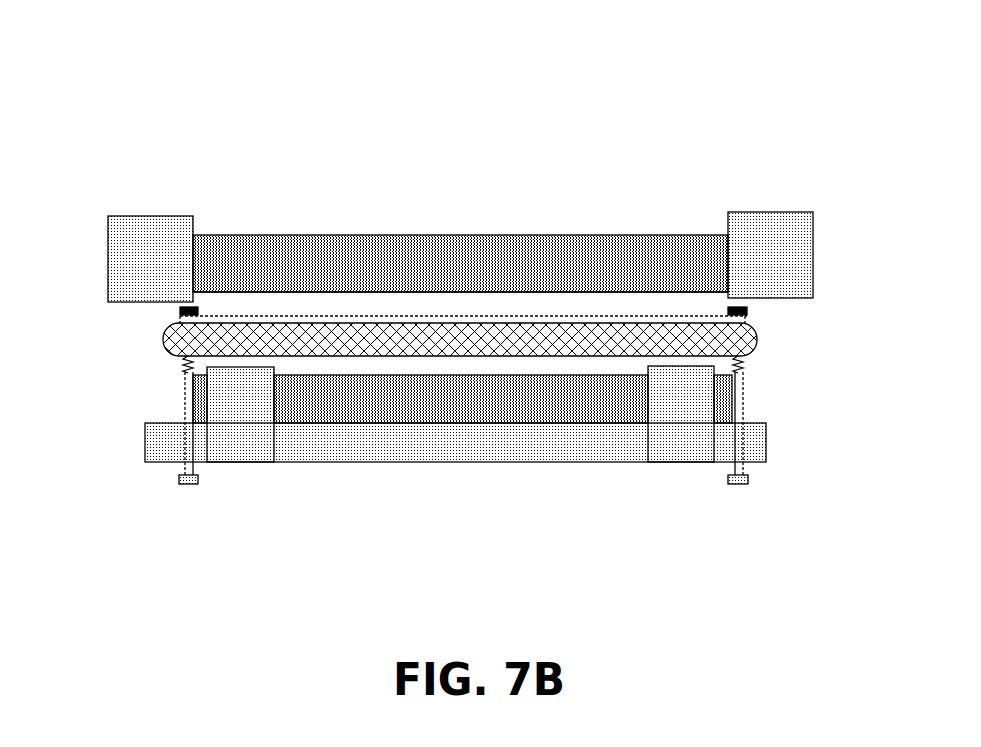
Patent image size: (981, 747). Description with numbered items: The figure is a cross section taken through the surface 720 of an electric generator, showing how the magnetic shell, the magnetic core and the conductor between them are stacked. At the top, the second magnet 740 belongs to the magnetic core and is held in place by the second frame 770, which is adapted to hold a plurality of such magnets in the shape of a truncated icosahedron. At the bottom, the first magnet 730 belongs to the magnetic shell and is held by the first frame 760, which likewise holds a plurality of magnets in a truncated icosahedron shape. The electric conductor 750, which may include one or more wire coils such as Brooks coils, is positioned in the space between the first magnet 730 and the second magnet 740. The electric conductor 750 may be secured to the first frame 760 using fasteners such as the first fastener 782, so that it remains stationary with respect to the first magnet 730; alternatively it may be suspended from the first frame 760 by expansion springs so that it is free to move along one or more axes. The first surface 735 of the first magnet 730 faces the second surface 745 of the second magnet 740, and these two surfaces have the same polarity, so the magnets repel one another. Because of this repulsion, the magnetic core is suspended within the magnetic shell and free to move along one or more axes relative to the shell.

The surface 720 is at (694, 50).
The second frame 770 is at (150, 258).
The second magnet 740 is at (680, 258).
The second surface 745 is at (460, 292).
The electric conductor 750 is at (710, 343).
The first fastener 782 is at (510, 362).
The first magnet 730 is at (295, 395).
The first surface 735 is at (467, 375).
The first frame 760 is at (560, 448).